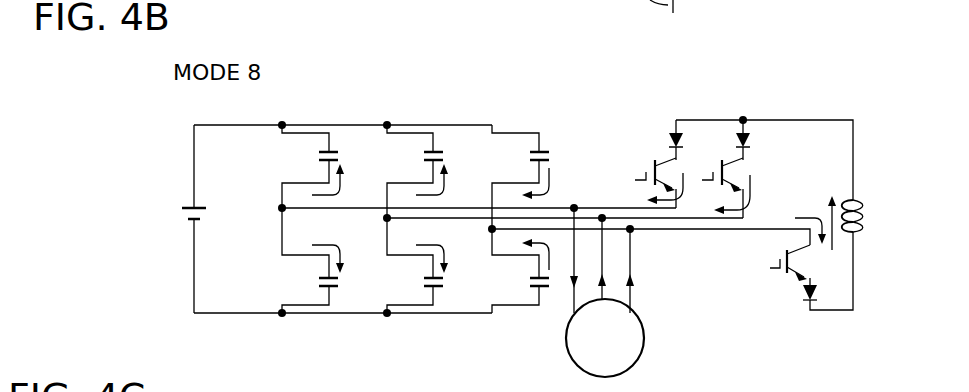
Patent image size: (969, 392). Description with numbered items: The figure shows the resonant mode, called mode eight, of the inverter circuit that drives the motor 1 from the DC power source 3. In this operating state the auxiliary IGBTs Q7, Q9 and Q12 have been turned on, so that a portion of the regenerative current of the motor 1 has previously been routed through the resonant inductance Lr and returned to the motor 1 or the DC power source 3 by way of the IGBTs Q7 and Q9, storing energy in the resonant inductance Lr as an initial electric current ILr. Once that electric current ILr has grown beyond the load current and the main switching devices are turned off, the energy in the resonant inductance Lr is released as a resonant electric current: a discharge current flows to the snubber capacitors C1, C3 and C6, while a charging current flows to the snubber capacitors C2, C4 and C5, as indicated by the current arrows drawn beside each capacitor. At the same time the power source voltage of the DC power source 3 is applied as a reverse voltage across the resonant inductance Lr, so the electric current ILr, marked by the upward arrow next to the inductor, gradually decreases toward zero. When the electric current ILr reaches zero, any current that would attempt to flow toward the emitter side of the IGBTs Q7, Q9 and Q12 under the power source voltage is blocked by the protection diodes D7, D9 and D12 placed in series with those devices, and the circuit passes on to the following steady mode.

The DC power source 3 is at (187, 204).
The snubber capacitor C1 is at (336, 150).
The snubber capacitor C2 is at (338, 292).
The snubber capacitor C3 is at (440, 150).
The snubber capacitor C4 is at (442, 292).
The snubber capacitor C5 is at (546, 150).
The snubber capacitor C6 is at (546, 292).
The IGBT Q7 is at (663, 160).
The protection diode D7 is at (680, 133).
The IGBT Q9 is at (730, 160).
The protection diode D9 is at (748, 133).
The IGBT Q12 is at (790, 275).
The protection diode D12 is at (817, 300).
The resonant inductance Lr is at (862, 230).
The electric current ILr is at (830, 209).
The motor 1 is at (632, 364).